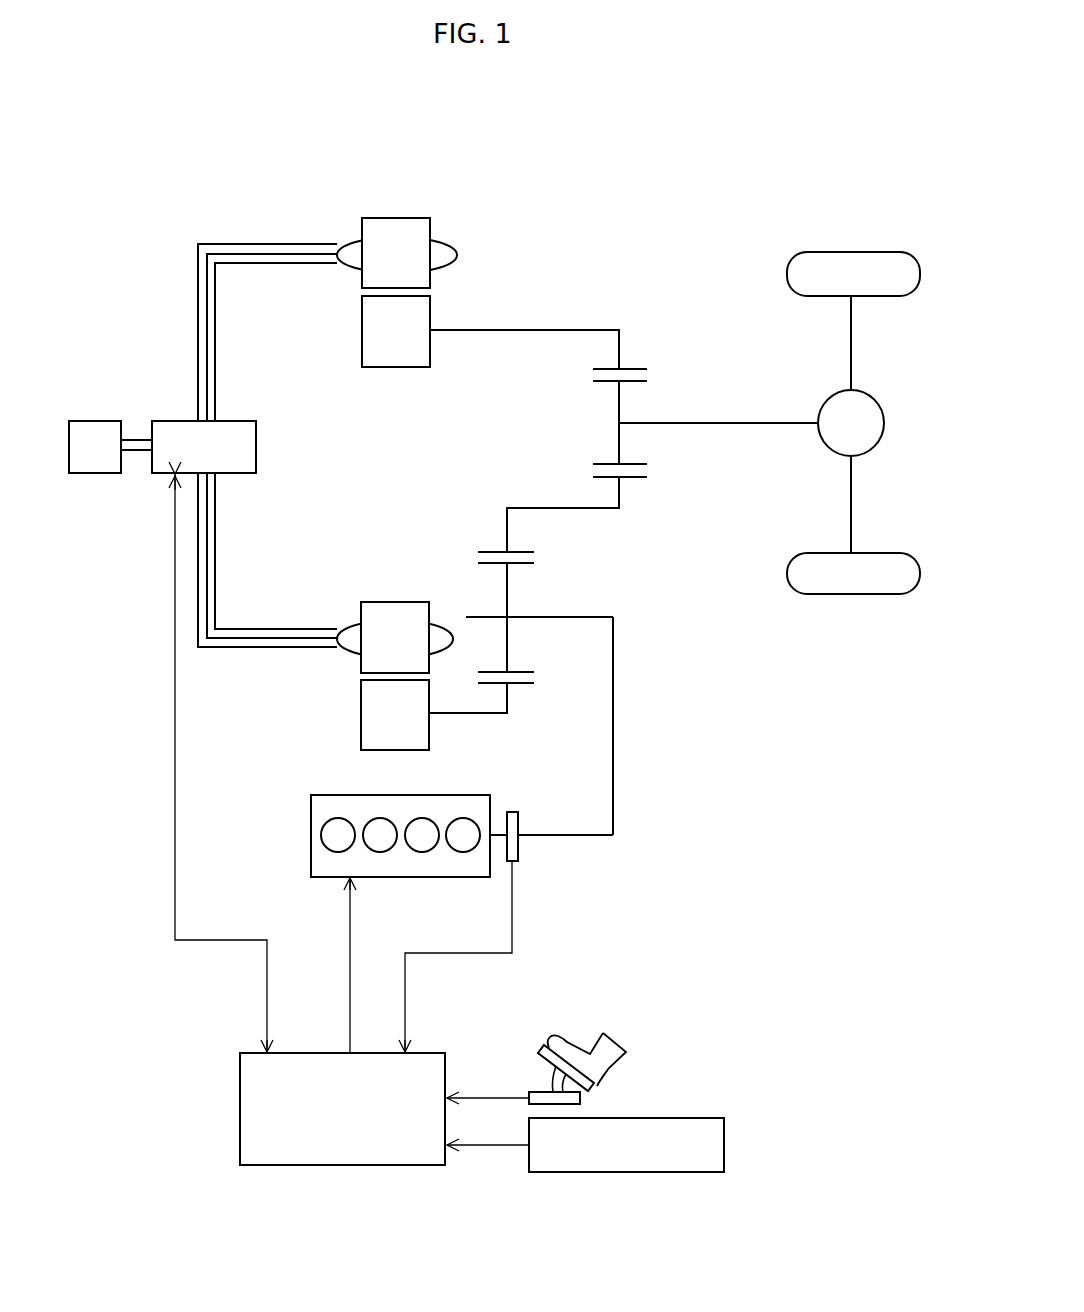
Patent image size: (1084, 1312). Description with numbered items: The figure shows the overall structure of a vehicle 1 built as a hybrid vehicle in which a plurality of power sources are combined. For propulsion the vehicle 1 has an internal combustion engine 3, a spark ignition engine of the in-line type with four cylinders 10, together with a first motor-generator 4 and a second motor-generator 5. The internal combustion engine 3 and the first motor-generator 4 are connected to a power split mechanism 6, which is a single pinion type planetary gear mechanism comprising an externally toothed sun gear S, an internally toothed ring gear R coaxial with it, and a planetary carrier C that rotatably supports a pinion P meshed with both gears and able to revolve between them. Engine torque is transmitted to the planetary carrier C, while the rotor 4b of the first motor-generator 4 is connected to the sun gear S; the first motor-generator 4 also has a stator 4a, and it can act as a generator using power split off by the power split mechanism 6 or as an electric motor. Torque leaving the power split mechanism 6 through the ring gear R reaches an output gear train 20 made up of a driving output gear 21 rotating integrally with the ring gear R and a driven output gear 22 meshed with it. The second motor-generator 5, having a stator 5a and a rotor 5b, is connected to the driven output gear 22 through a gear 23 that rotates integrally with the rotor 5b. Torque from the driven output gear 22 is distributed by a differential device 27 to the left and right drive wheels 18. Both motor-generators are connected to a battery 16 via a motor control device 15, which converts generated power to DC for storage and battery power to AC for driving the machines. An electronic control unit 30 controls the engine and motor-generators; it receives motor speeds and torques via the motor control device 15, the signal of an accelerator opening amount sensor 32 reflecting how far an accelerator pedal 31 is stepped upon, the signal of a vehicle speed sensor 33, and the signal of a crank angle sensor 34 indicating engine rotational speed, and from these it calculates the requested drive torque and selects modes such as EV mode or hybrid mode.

The vehicle 1 is at (512, 116).
The internal combustion engine 3 is at (392, 828).
The first motor-generator 4 is at (402, 650).
The stator 4a is at (402, 612).
The rotor 4b is at (421, 740).
The second motor-generator 5 is at (380, 248).
The stator 5a is at (403, 228).
The rotor 5b is at (369, 340).
The power split mechanism 6 is at (533, 651).
The cylinders 10 is at (420, 849).
The motor control device 15 is at (170, 428).
The battery 16 is at (95, 428).
The drive wheels 18 is at (835, 252).
The output gear train 20 is at (624, 440).
The driving output gear 21 is at (598, 478).
The driven output gear 22 is at (600, 464).
The gear 23 is at (641, 368).
The differential device 27 is at (820, 400).
The electronic control unit 30 is at (240, 1105).
The accelerator pedal 31 is at (545, 1050).
The accelerator opening amount sensor 32 is at (582, 1098).
The vehicle speed sensor 33 is at (726, 1145).
The crank angle sensor 34 is at (520, 859).
The ring gear R is at (532, 542).
The pinion P is at (507, 590).
The sun gear S is at (530, 686).
The planetary carrier C is at (613, 650).